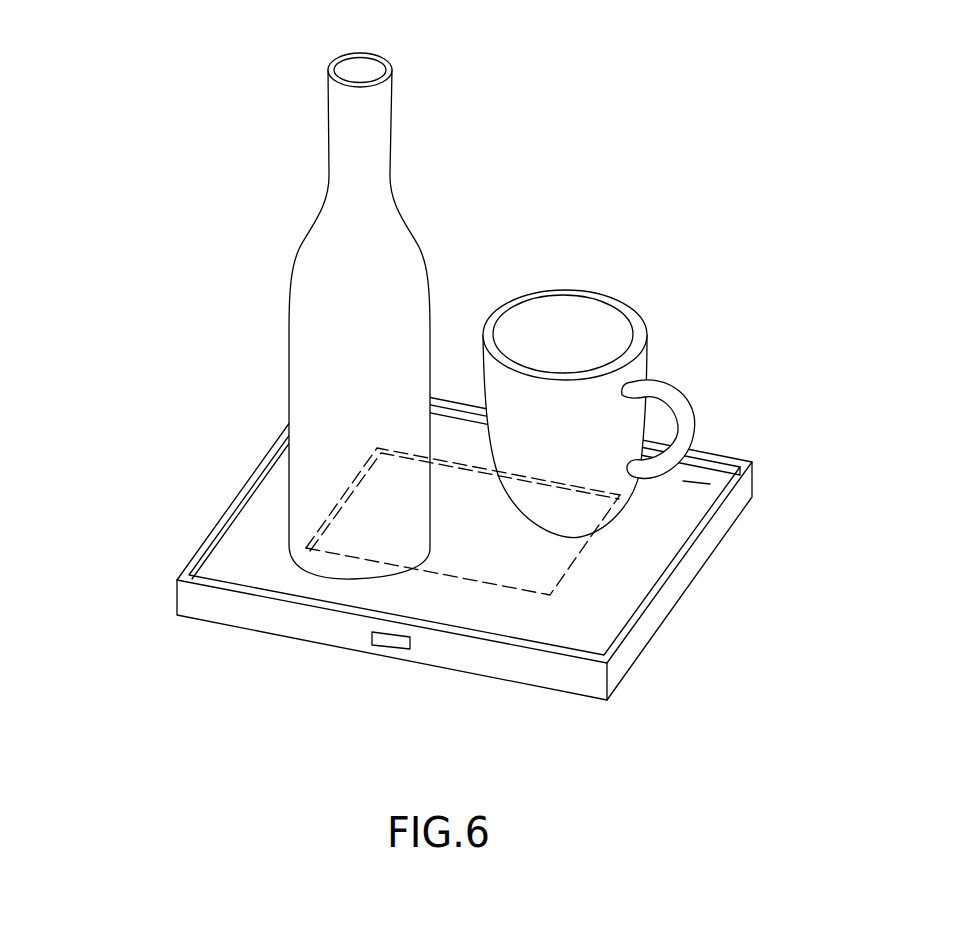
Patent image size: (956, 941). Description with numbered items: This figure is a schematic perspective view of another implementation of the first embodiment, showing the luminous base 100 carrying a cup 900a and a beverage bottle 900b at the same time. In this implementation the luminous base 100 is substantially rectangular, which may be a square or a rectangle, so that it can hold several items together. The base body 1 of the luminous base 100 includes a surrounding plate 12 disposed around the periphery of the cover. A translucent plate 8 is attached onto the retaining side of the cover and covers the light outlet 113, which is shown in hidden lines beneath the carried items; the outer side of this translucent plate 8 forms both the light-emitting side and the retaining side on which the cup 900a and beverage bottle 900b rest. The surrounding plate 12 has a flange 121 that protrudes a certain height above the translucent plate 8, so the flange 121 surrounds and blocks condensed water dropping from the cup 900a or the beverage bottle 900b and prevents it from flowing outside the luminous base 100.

The luminous base 100 is at (438, 573).
The base body 1 is at (483, 573).
The surrounding plate 12 is at (652, 628).
The flange 121 is at (243, 497).
The translucent plate 8 is at (697, 482).
The light outlet 113 is at (348, 486).
The cup 900a is at (667, 338).
The beverage bottle 900b is at (282, 260).